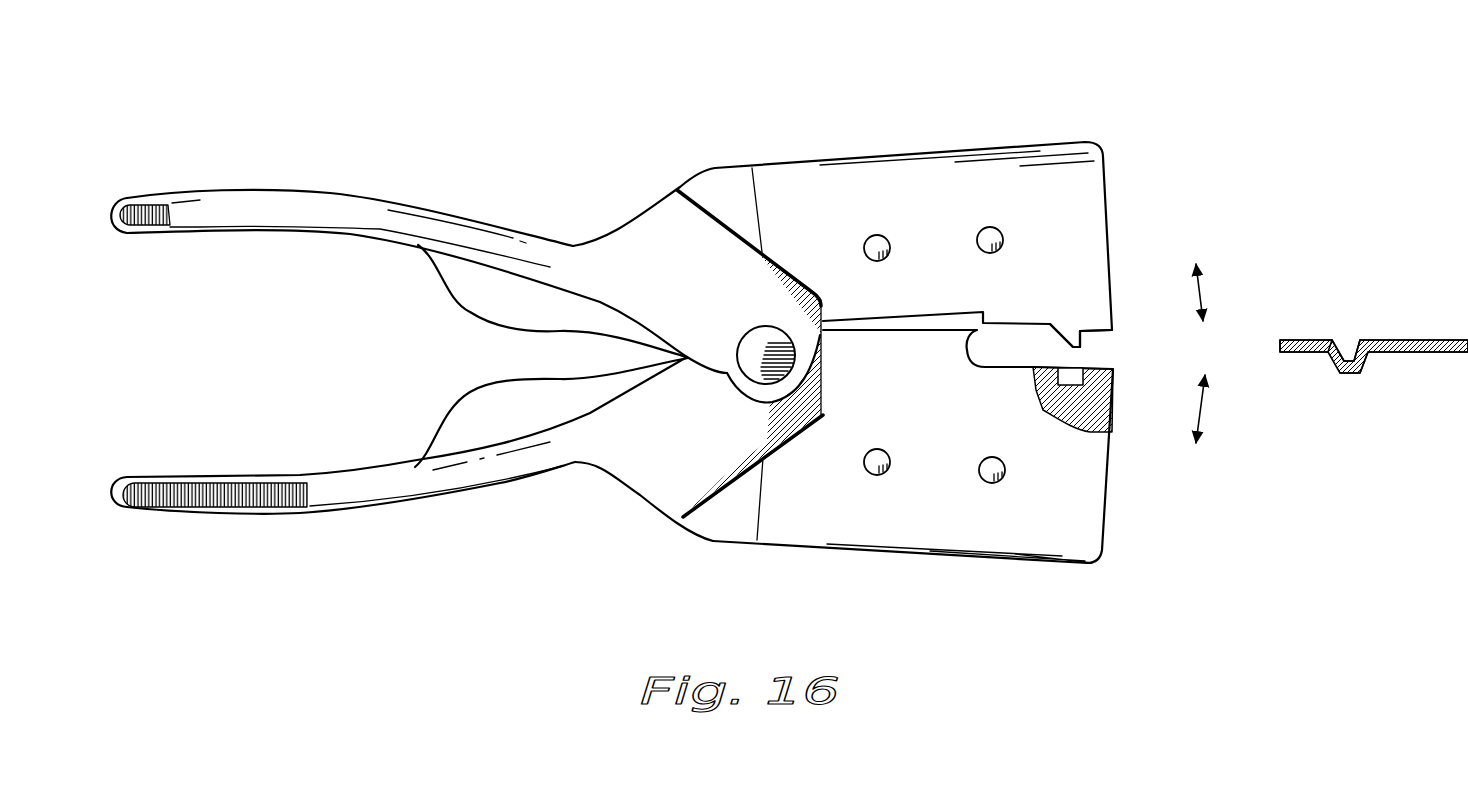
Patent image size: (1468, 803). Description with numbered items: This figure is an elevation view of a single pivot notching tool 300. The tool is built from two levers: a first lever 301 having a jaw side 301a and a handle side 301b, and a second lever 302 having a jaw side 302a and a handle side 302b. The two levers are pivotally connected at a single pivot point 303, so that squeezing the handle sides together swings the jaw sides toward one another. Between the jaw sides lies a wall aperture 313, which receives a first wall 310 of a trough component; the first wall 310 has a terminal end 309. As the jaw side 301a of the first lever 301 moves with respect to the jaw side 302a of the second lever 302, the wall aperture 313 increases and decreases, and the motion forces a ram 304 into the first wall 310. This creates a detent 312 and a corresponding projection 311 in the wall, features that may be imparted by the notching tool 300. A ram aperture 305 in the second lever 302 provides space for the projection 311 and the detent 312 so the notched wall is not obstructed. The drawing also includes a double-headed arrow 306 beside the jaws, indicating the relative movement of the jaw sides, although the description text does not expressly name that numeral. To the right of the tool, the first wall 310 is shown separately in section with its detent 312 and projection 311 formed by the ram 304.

The single pivot notching tool 300 is at (935, 70).
The first lever 301 is at (735, 167).
The jaw side of first lever 301a is at (963, 227).
The handle side of first lever 301b is at (260, 497).
The second lever 302 is at (737, 520).
The jaw side of second lever 302a is at (1060, 526).
The handle side of second lever 302b is at (283, 210).
The pivot point 303 is at (767, 347).
The ram 304 is at (1070, 330).
The ram aperture 305 is at (1037, 388).
The direction of jaw movement 306 is at (1203, 293).
The terminal end 309 is at (1278, 346).
The first wall 310 is at (1318, 348).
The projection 311 is at (1369, 366).
The detent 312 is at (1343, 336).
The wall aperture 313 is at (1092, 348).